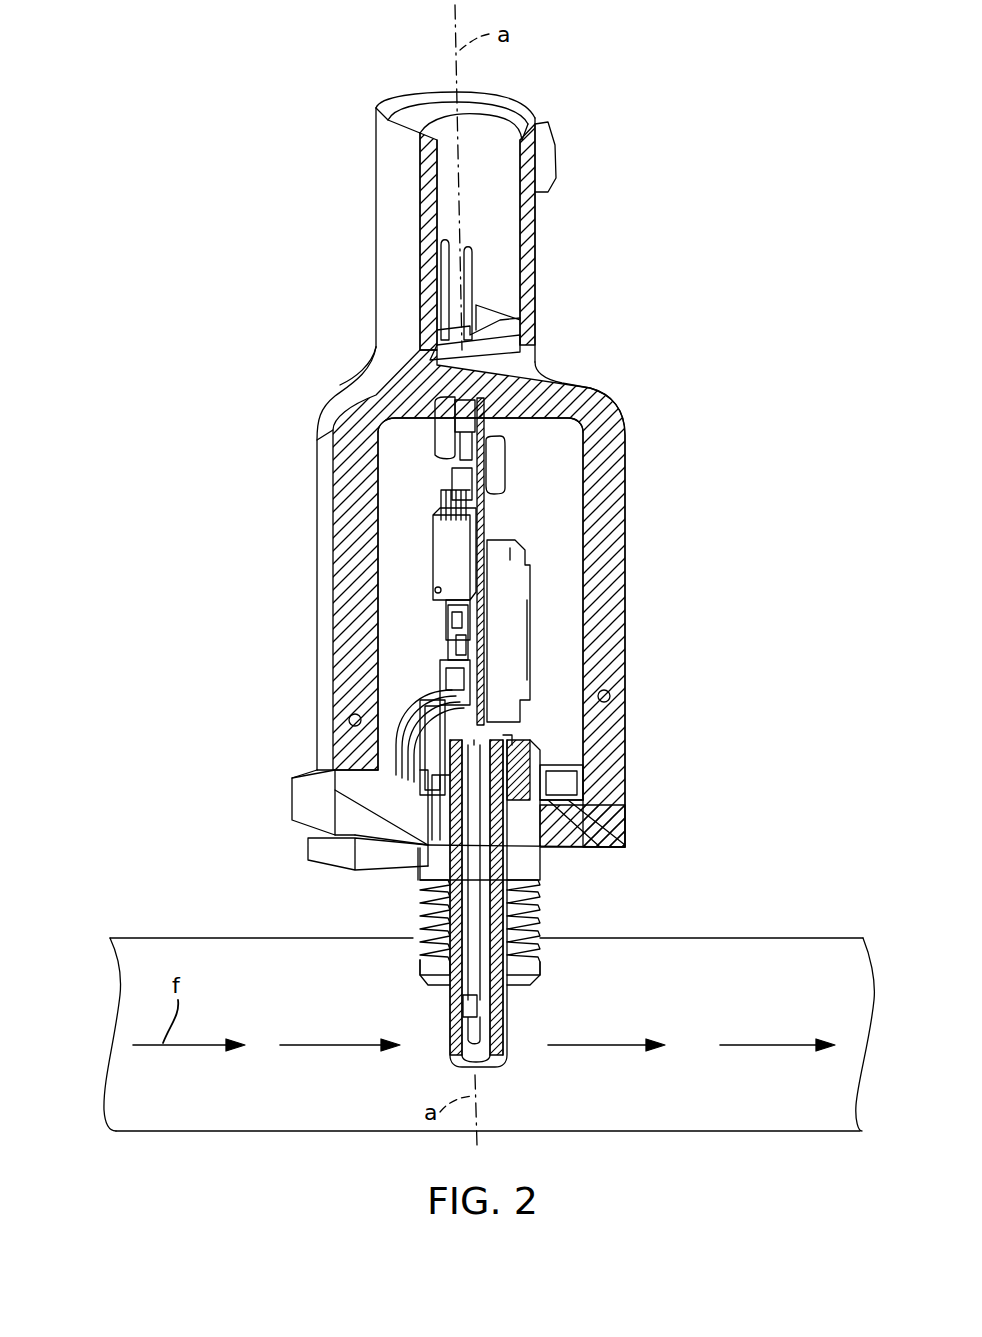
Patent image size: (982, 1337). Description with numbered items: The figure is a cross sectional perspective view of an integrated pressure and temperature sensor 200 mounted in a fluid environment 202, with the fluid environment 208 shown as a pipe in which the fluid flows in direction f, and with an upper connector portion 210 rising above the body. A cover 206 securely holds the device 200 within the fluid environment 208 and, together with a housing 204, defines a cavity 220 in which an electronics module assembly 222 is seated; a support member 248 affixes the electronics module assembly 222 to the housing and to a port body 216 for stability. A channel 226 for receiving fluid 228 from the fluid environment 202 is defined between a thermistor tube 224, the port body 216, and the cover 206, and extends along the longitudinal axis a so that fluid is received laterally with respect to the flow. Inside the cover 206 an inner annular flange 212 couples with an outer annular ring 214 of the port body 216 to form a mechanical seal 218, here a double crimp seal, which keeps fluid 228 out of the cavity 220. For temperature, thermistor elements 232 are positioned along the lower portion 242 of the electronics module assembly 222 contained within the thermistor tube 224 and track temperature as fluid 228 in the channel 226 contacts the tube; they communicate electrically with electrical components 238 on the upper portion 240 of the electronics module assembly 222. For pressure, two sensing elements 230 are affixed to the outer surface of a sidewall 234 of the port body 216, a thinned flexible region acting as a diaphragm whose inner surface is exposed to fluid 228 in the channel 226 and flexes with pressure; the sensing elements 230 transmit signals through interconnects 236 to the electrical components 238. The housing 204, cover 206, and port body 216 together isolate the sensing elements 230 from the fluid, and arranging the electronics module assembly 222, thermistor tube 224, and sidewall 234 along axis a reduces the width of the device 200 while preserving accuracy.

The integrated pressure and temperature sensor 200 is at (110, 125).
The fluid environment 202 is at (794, 950).
The housing 204 is at (598, 396).
The cover 206 is at (614, 808).
The fluid environment 208 is at (418, 938).
The electrical connector 210 is at (508, 236).
The inner annular flange 212 is at (553, 800).
The outer annular ring 214 is at (568, 778).
The port body 216 is at (545, 705).
The mechanical seal 218 is at (322, 792).
The cavity 220 is at (572, 532).
The electronics module assembly 222 is at (440, 640).
The thermistor tube 224 is at (530, 880).
The channel 226 is at (518, 990).
The fluid 228 is at (532, 909).
The sensing elements 230 is at (415, 748).
The thermistor elements 232 is at (462, 1006).
The sidewall 234 is at (422, 797).
The interconnects 236 is at (432, 692).
The electrical components 238 is at (445, 552).
The upper portion 240 is at (486, 522).
The lower portion 242 is at (440, 932).
The support member 248 is at (530, 568).